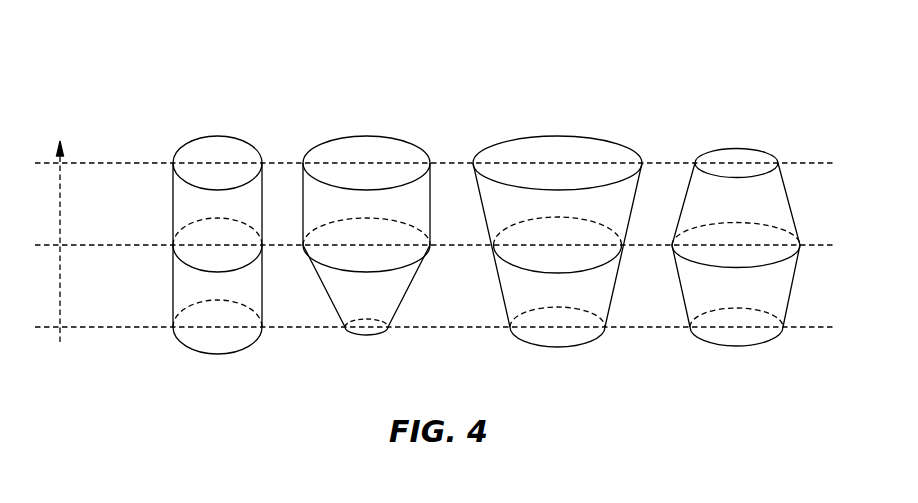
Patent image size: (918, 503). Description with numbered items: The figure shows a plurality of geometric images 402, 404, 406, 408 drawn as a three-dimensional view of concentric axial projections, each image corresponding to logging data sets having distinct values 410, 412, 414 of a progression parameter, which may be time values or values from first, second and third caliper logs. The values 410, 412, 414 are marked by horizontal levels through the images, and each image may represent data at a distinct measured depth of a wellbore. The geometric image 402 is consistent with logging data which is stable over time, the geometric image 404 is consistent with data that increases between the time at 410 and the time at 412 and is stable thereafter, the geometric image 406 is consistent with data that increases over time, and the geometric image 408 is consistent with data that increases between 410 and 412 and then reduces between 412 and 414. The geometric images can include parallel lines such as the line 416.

The geometric image 402 is at (217, 354).
The geometric image 404 is at (364, 336).
The geometric image 406 is at (557, 241).
The geometric image 408 is at (736, 348).
The progression parameter value 410 is at (147, 327).
The progression parameter value 412 is at (147, 245).
The progression parameter value 414 is at (147, 163).
The line 416 is at (565, 163).